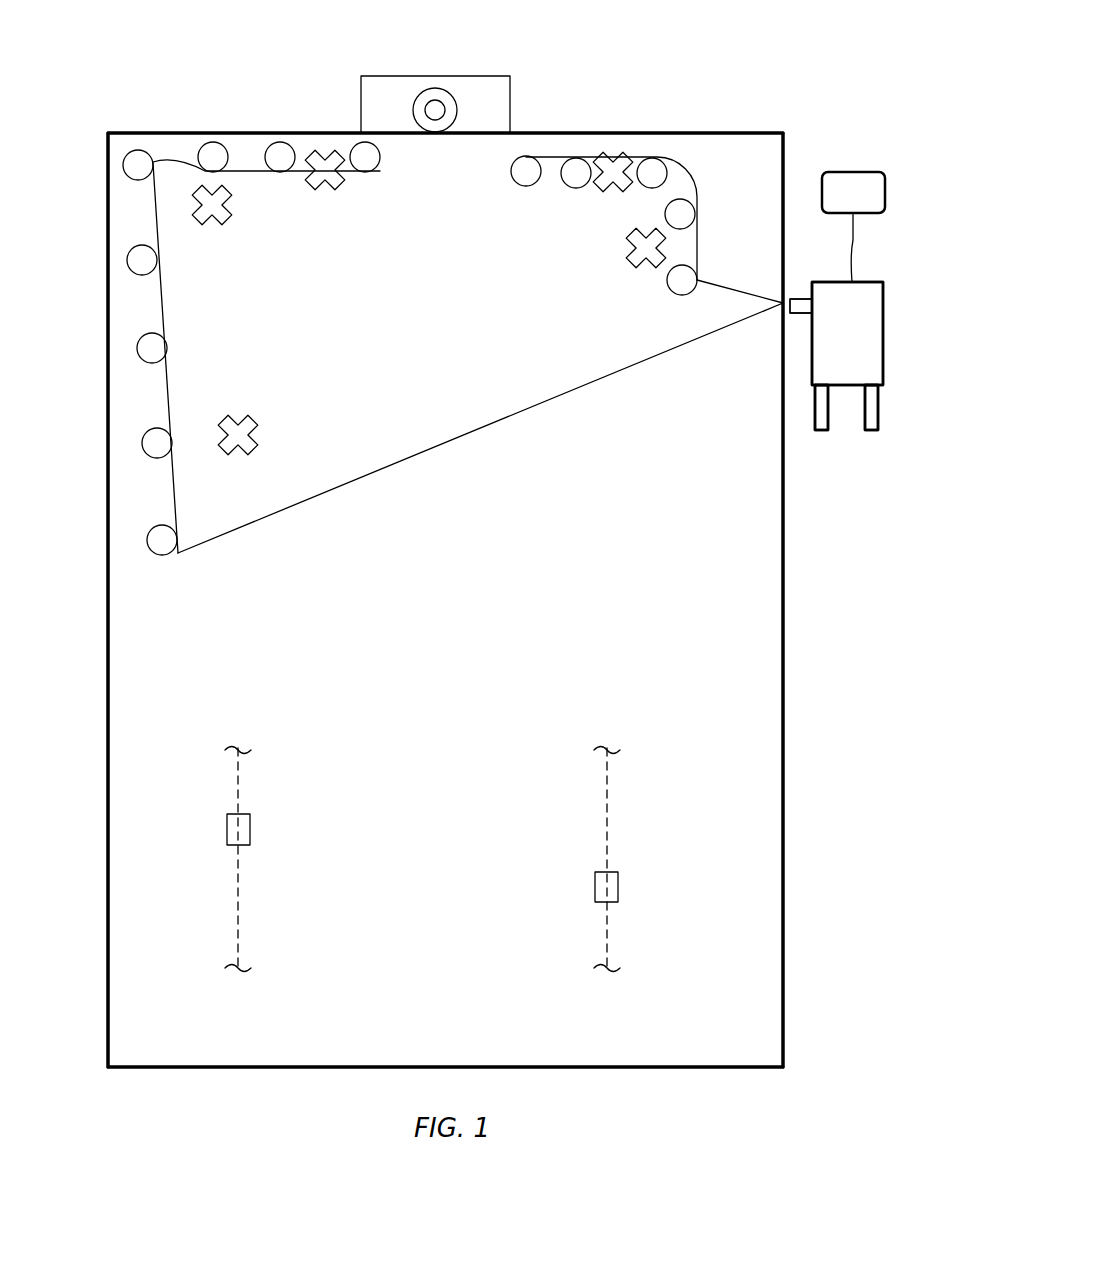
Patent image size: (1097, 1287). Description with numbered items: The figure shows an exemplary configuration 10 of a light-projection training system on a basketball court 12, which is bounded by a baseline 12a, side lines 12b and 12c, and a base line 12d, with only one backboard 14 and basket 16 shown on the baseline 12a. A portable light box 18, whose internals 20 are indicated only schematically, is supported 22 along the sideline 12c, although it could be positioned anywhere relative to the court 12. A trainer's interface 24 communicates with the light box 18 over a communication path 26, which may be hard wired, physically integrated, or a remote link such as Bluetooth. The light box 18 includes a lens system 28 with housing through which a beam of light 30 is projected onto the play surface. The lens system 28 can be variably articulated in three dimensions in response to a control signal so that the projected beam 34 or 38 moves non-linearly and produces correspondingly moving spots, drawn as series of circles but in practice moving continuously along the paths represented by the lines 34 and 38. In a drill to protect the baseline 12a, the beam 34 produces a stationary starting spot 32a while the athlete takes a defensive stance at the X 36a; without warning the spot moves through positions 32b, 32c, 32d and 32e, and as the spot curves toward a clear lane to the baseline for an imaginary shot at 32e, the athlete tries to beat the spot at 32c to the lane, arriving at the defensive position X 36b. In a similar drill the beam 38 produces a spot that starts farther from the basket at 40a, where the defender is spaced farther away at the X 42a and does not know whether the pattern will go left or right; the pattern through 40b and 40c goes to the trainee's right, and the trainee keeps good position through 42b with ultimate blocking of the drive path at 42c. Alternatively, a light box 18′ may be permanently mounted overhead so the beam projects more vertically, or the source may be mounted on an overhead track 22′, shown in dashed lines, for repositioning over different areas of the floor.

The configuration 10 is at (652, 38).
The basketball court 12 is at (428, 705).
The baseline 12a is at (158, 133).
The side line 12b is at (108, 583).
The sideline 12c is at (783, 660).
The base line 12d is at (380, 1067).
The backboard 14 is at (422, 76).
The basket 16 is at (452, 115).
The light box 18 is at (897, 320).
The internals 20 is at (873, 340).
The support 22 is at (875, 410).
The trainer's interface 24 is at (838, 172).
The communication path 26 is at (852, 250).
The lens system 28 is at (800, 298).
The beam of light 30 is at (780, 310).
The starting spot 32a is at (670, 290).
The spot position 32b is at (668, 214).
The spot position 32c is at (652, 165).
The spot position 32d is at (580, 158).
The spot position 32e is at (512, 178).
The beam 34 is at (687, 177).
The defensive stance 36a is at (636, 258).
The defensive position 36b is at (605, 185).
The beam 38 is at (432, 455).
The starting spot 40a is at (162, 555).
The spot position 40b is at (135, 150).
The spot position 40c is at (280, 143).
The defensive position 42a is at (250, 425).
The defensive position 42b is at (222, 215).
The blocking position 42c is at (335, 182).
The light box 18′ is at (250, 828).
The overhead track 22′ is at (240, 912).